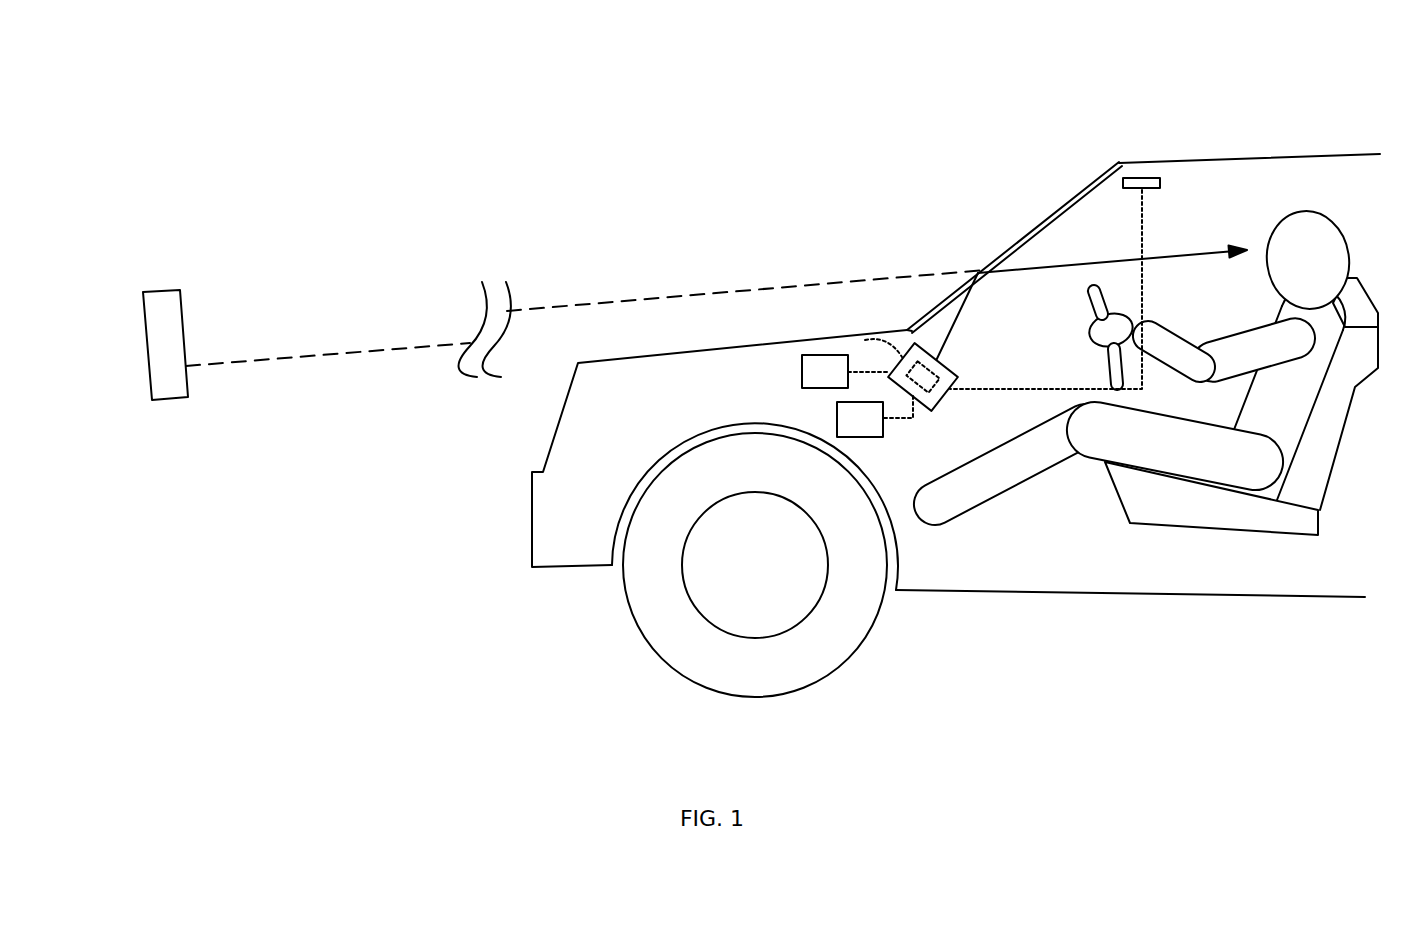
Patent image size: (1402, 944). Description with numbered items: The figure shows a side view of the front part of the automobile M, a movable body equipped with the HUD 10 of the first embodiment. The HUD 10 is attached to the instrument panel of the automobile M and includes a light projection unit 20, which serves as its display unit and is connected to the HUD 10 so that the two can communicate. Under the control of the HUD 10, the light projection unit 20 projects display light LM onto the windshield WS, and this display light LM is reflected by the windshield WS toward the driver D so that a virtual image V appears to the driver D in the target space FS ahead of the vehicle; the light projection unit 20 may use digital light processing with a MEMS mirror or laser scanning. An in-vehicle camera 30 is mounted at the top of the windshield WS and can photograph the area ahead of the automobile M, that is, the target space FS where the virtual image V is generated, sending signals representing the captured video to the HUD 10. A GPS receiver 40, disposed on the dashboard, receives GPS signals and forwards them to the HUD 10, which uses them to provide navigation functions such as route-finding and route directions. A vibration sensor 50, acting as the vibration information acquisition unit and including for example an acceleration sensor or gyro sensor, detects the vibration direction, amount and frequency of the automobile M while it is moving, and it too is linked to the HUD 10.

The automobile M is at (1320, 132).
The target space FS is at (158, 140).
The virtual image V is at (173, 290).
The windshield WS is at (1103, 175).
The driver D is at (1339, 228).
The display light LM is at (1200, 252).
The HUD 10 is at (960, 380).
The light projection unit 20 is at (862, 338).
The in-vehicle camera 30 is at (1155, 178).
The GPS receiver 40 is at (800, 375).
The vibration sensor 50 is at (872, 437).